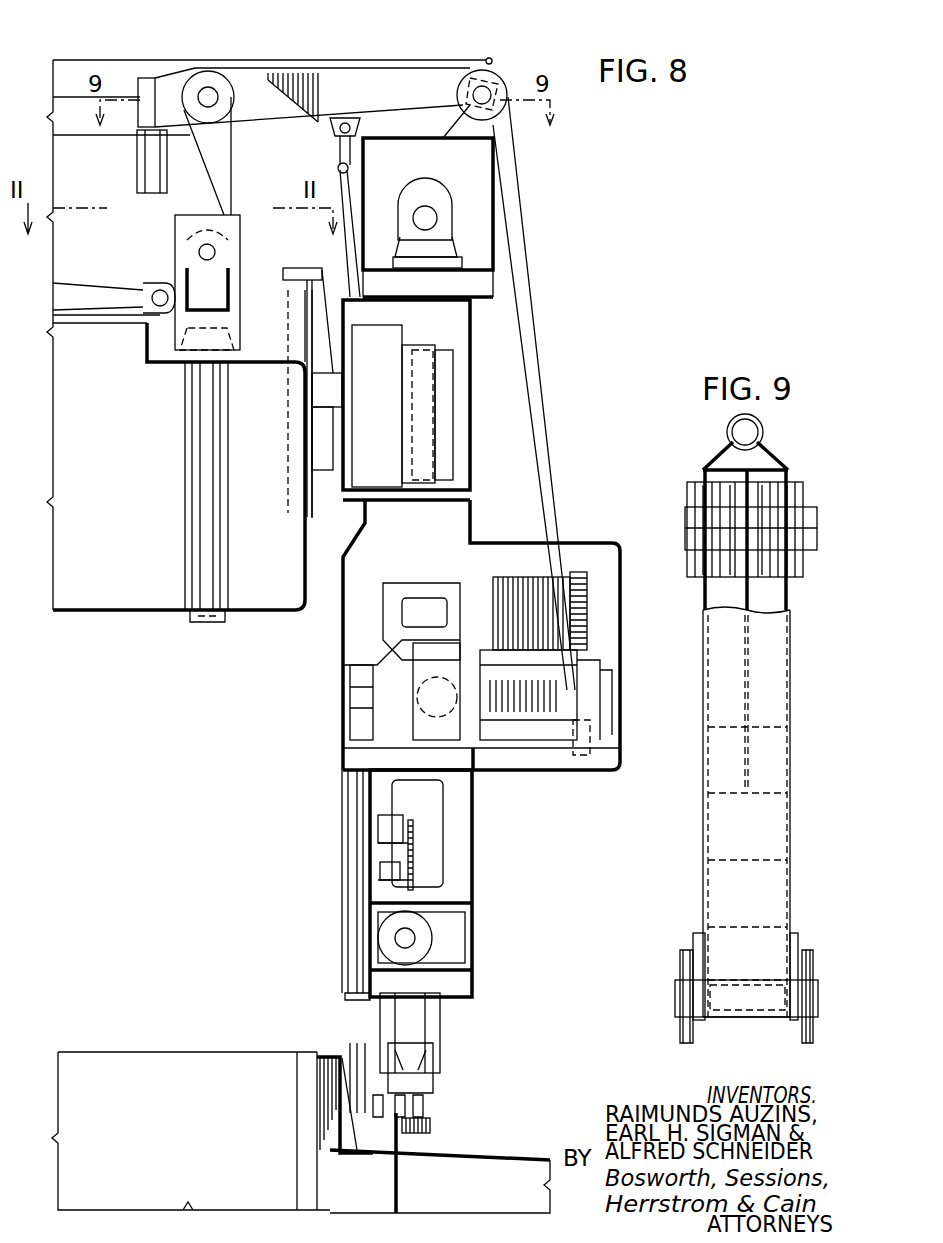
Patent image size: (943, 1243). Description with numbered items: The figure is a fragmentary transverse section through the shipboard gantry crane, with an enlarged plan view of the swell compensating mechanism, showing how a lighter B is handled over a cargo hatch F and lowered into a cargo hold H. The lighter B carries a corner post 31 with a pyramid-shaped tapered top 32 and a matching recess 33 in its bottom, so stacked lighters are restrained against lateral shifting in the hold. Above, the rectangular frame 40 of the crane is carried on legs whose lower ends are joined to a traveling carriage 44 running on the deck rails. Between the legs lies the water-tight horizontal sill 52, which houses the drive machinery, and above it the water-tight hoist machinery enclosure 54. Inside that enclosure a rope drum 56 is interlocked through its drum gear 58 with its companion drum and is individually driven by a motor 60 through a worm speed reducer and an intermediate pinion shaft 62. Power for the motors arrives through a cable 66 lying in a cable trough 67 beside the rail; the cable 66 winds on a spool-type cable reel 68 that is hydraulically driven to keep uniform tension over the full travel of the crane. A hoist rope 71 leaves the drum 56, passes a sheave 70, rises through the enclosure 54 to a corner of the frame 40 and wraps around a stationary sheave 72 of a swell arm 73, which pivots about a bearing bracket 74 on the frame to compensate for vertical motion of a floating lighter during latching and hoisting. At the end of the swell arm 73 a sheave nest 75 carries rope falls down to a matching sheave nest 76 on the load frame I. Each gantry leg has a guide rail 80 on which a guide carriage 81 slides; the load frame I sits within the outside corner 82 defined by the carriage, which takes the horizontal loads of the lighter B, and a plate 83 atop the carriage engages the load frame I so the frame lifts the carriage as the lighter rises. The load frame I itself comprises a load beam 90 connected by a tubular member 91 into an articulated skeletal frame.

In FIG. 8, the corner post 31 is at (185, 400).
In FIG. 8, the tapered top 32 is at (225, 333).
In FIG. 8, the matching recess 33 is at (205, 622).
In FIG. 8, the rectangular frame 40 is at (500, 178).
In FIG. 8, the traveling carriage 44 is at (428, 1022).
In FIG. 8, the horizontal sill 52 is at (474, 947).
In FIG. 8, the hoist machinery enclosure 54 is at (622, 553).
In FIG. 8, the rope drum 56 is at (490, 590).
In FIG. 8, the drum gear 58 is at (595, 598).
In FIG. 8, the motor 60 is at (428, 700).
In FIG. 8, the intermediate pinion shaft 62 is at (428, 665).
In FIG. 8, the cable 66 is at (357, 1013).
In FIG. 8, the cable trough 67 is at (353, 1156).
In FIG. 8, the cable reel 68 is at (350, 826).
In FIG. 8, the sheave 70 is at (437, 932).
In FIG. 8, the hoist rope 71 is at (262, 172).
In FIG. 8, the stationary sheave 72 is at (500, 72).
In FIG. 9, the stationary sheave 72 is at (680, 1035).
In FIG. 8, the swell arm 73 is at (360, 78).
In FIG. 9, the swell arm 73 is at (790, 705).
In FIG. 8, the bearing bracket 74 is at (452, 127).
In FIG. 9, the bearing bracket 74 is at (797, 937).
In FIG. 8, the sheave nest 75 is at (203, 82).
In FIG. 9, the sheave nest 75 is at (803, 493).
In FIG. 8, the matching sheave nest 76 is at (182, 233).
In FIG. 8, the guide rail 80 is at (353, 560).
In FIG. 8, the guide carriage 81 is at (350, 512).
In FIG. 8, the outside corner 82 is at (340, 440).
In FIG. 8, the plate 83 is at (290, 268).
In FIG. 8, the load beam 90 is at (230, 290).
In FIG. 8, the tubular member 91 is at (112, 290).
In FIG. 8, the lighter B is at (98, 615).
In FIG. 8, the cargo hatch F is at (310, 1073).
In FIG. 8, the cargo hold H is at (118, 1205).
In FIG. 8, the load frame I is at (78, 284).